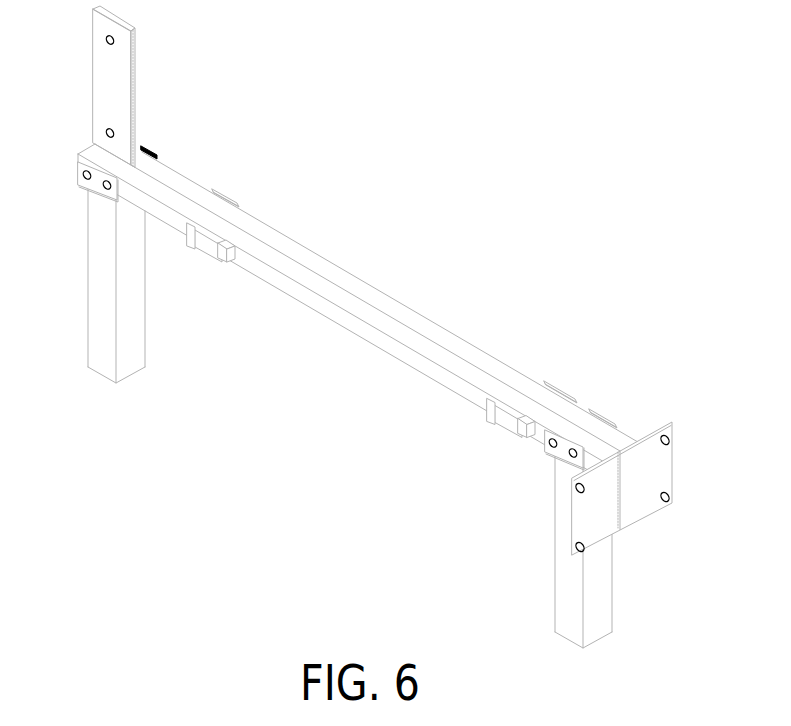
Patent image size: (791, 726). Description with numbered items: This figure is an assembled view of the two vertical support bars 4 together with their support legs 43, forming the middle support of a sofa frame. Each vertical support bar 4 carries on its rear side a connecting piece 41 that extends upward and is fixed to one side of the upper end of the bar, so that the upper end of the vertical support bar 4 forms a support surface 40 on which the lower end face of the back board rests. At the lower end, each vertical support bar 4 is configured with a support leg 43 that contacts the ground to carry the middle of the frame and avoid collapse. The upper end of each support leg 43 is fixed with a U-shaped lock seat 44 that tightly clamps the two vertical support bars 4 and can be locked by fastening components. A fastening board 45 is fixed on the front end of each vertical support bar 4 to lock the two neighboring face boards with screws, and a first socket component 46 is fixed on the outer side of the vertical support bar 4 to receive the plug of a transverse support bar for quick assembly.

The vertical support bar 4 is at (372, 295).
The support surface 40 is at (100, 157).
The connecting piece 41 is at (105, 88).
The support leg 43 is at (95, 247).
The U-shaped lock seat 44 is at (88, 185).
The fastening board 45 is at (603, 532).
The first socket component 46 is at (233, 202).